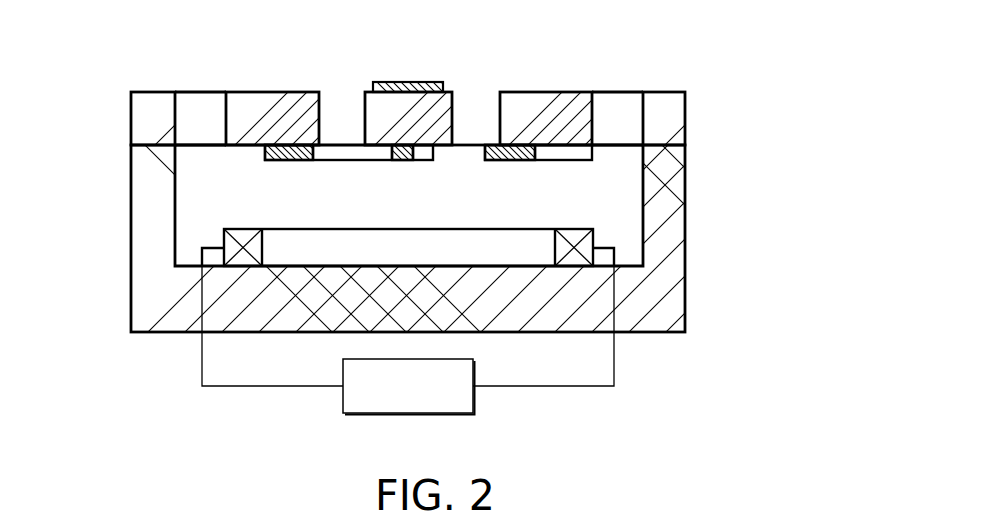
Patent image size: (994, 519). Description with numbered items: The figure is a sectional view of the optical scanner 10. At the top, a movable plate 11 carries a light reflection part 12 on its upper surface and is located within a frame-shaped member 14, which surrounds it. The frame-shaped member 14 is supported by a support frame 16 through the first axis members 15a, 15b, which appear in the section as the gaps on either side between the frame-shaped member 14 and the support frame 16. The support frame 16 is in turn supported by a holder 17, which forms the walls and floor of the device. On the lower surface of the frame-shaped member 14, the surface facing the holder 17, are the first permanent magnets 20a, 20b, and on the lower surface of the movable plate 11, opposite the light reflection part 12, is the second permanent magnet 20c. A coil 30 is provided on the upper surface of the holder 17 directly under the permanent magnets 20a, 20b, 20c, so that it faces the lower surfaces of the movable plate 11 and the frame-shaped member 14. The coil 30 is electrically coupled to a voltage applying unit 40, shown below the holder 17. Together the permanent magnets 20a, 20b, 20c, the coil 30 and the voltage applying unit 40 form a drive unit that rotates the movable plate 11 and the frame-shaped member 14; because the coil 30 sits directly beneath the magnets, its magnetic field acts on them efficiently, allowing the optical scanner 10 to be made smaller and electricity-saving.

The optical scanner 10 is at (728, 73).
The movable plate 11 is at (446, 116).
The light reflection part 12 is at (420, 84).
The frame-shaped member 14 is at (268, 113).
The first axis member 15a is at (194, 108).
The first axis member 15b is at (620, 108).
The support frame 16 is at (142, 119).
The holder 17 is at (675, 211).
The first permanent magnet 20a is at (290, 158).
The first permanent magnet 20b is at (515, 158).
The second permanent magnet 20c is at (412, 158).
The coil 30 is at (513, 248).
The voltage applying unit 40 is at (453, 413).